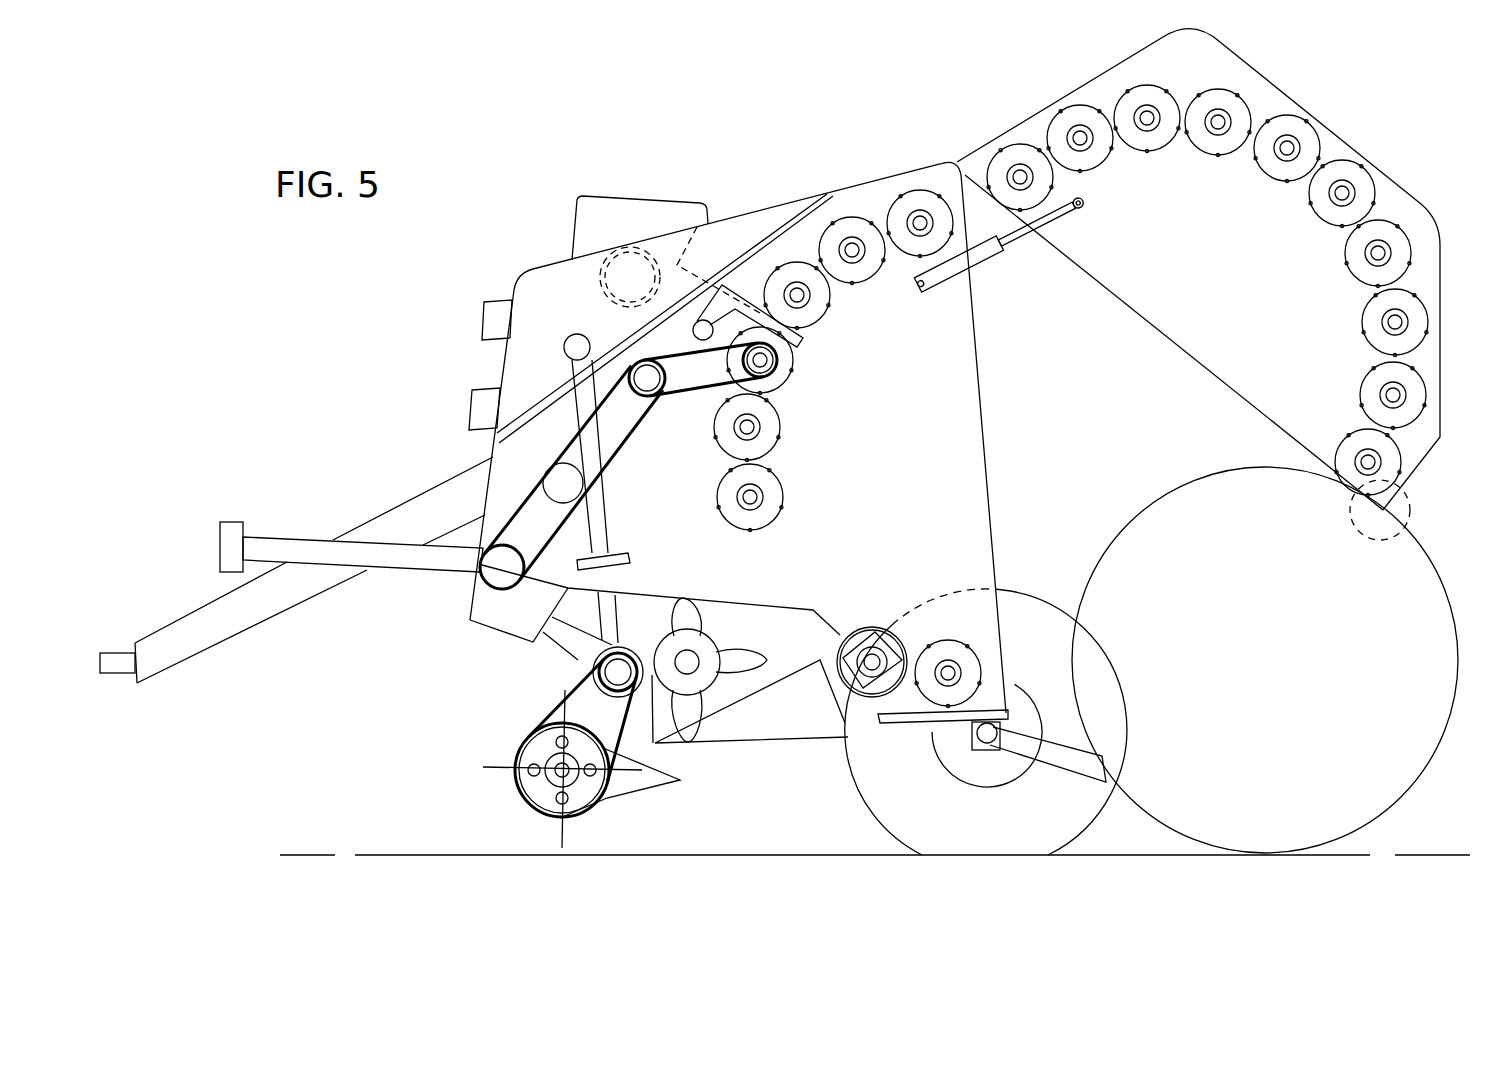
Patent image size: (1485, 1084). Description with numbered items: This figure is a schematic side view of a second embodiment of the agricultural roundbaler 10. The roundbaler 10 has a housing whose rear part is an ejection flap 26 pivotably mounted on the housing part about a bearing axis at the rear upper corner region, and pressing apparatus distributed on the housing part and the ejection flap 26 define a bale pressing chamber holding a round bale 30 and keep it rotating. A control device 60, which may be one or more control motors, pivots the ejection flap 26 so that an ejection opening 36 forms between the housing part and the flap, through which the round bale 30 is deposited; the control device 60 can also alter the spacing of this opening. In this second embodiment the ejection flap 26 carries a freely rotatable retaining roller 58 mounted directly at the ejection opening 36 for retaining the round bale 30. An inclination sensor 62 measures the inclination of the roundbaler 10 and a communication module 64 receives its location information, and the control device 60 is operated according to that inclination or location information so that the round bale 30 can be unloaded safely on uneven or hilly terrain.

The roundbaler 10 is at (463, 360).
The ejection flap 26 is at (1255, 253).
The round bale 30 is at (1400, 803).
The ejection opening 36 is at (1049, 508).
The retaining roller 58 is at (1352, 538).
The control device 60 is at (933, 292).
The inclination sensor 62 is at (483, 312).
The communication module 64 is at (470, 394).